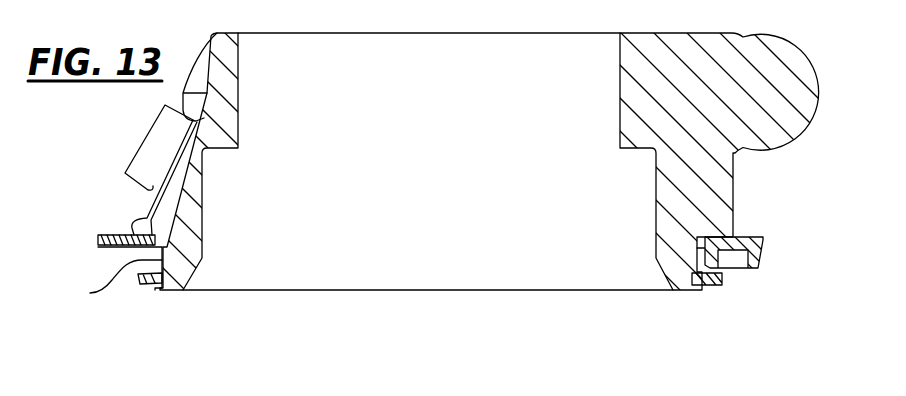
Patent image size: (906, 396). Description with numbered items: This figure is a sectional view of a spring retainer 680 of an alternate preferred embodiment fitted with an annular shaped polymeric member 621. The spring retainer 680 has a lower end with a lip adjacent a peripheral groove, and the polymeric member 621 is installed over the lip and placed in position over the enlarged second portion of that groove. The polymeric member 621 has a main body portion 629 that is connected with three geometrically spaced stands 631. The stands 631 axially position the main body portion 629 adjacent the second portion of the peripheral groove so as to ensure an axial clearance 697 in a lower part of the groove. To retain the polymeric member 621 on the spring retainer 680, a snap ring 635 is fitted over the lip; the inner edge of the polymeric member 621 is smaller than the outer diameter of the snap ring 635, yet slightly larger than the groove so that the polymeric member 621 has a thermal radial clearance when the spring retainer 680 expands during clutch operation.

The spring retainer 680 is at (216, 34).
The main body portion 629 is at (99, 241).
The polymeric member 621 is at (100, 249).
The axial clearance 697 is at (90, 293).
The stands 631 is at (764, 254).
The snap ring 635 is at (726, 281).